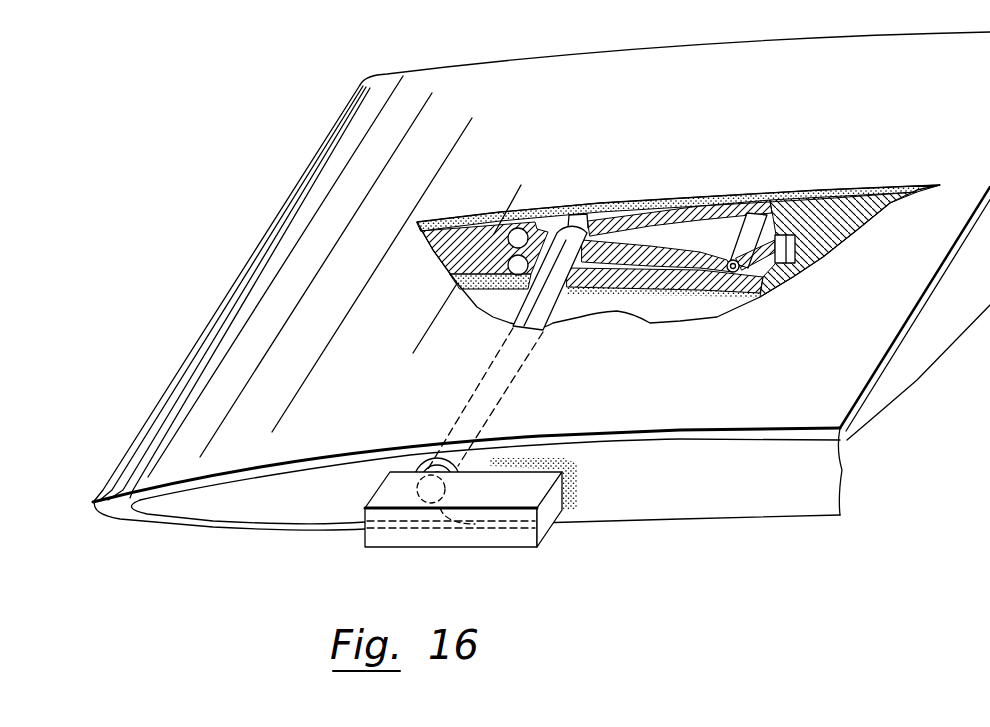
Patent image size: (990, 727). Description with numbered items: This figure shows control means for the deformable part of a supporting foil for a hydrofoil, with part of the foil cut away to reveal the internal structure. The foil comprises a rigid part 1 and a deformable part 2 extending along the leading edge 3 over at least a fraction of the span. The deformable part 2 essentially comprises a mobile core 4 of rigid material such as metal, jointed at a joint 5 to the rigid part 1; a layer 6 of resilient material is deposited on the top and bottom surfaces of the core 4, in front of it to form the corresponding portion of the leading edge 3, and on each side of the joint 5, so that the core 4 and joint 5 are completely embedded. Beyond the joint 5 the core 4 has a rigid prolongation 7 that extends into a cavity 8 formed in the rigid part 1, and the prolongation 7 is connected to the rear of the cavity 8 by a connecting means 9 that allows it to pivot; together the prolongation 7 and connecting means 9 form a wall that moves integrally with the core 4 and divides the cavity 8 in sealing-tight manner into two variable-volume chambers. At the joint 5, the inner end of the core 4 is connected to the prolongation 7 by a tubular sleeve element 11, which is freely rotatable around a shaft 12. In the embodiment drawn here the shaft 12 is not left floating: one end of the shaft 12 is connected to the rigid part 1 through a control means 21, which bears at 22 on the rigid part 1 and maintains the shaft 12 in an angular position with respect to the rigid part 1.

The rigid part 1 is at (574, 532).
The deformable part 2 is at (299, 540).
The leading edge 3 is at (281, 210).
The mobile core 4 is at (498, 216).
The joint 5 is at (546, 222).
The layer of resilient material 6 is at (477, 216).
The prolongation 7 is at (697, 253).
The cavity 8 is at (660, 231).
The connecting means 9 is at (767, 232).
The tubular sleeve element 11 is at (580, 214).
The shaft 12 is at (550, 327).
The control means 21 is at (497, 532).
The bearing point 22 is at (572, 489).